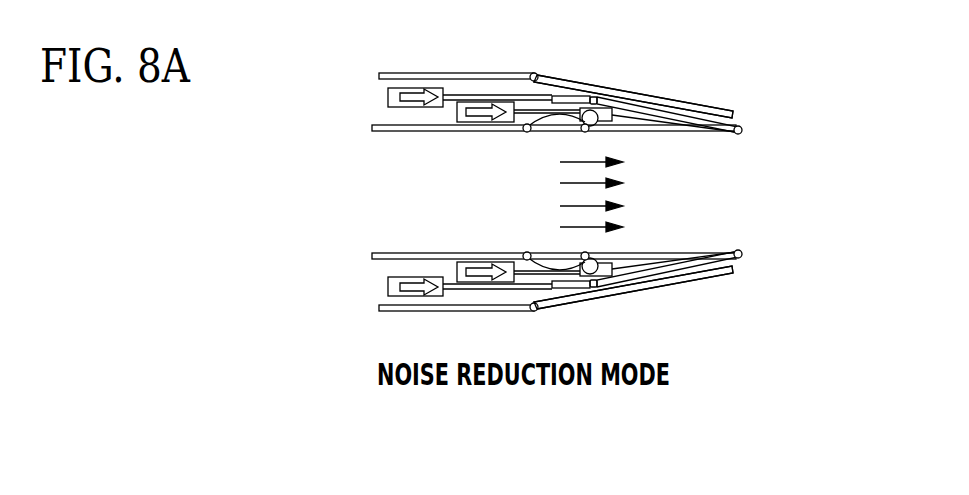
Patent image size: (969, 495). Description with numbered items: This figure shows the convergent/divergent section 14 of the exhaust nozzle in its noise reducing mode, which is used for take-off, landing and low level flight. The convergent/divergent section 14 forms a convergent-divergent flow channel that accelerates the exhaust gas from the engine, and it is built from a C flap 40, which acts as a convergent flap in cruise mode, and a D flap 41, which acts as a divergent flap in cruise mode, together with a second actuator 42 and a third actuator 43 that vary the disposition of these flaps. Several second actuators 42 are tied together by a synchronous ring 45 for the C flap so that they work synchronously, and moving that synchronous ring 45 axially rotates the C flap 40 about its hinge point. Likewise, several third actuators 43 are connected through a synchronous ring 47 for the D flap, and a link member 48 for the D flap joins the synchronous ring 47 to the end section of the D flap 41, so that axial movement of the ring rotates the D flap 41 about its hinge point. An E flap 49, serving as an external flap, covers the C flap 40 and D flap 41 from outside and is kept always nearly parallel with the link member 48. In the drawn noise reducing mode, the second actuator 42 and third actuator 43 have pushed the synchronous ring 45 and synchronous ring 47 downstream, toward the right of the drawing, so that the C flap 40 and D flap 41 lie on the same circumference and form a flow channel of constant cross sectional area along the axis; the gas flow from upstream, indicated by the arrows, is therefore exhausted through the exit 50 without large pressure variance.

The convergent/divergent section 14 is at (770, 59).
The C flap 40 is at (545, 132).
The D flap 41 is at (650, 131).
The second actuator 42 is at (455, 113).
The third actuator 43 is at (388, 95).
The synchronous ring for C flaps 45 is at (617, 108).
The synchronous ring for D flap 47 is at (562, 95).
The link member for D flap 48 is at (668, 108).
The E flap 49 is at (718, 112).
The exit 50 is at (707, 207).